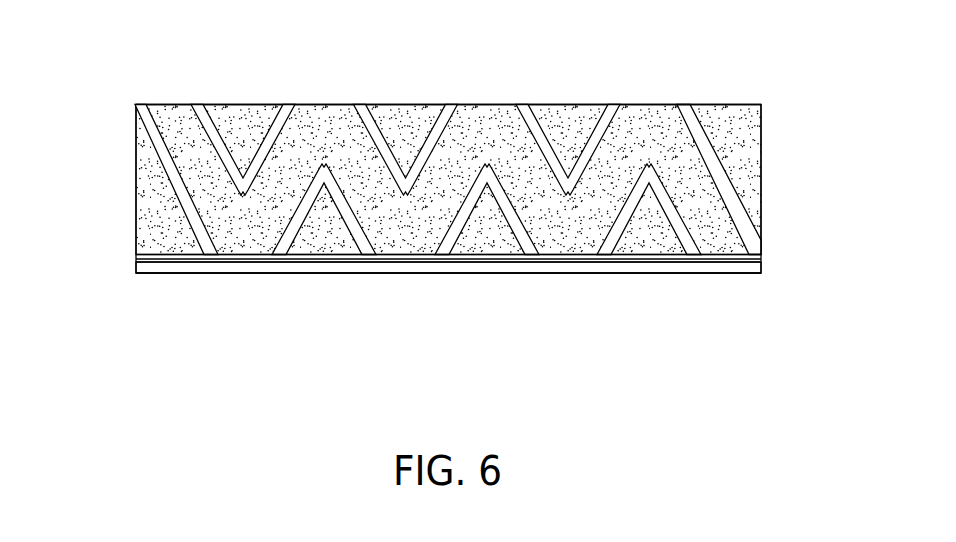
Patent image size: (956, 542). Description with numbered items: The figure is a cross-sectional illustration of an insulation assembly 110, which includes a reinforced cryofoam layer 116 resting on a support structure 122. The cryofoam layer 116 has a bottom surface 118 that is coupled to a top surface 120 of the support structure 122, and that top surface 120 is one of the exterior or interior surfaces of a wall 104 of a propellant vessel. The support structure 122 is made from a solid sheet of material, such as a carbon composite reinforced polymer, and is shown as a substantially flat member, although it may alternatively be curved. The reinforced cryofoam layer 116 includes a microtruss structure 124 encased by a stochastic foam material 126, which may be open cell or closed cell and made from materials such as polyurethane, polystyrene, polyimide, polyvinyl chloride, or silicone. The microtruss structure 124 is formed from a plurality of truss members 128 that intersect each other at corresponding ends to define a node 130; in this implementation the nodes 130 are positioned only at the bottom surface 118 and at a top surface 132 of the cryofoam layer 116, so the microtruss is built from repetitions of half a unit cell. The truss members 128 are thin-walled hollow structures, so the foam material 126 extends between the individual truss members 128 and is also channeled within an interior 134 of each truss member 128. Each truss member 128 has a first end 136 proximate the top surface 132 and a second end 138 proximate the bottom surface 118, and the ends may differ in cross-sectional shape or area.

The wall 104 is at (485, 265).
The insulation assembly 110 is at (108, 85).
The reinforced cryofoam layer 116 is at (772, 140).
The bottom surface 118 is at (755, 258).
The top surface 120 is at (158, 253).
The support structure 122 is at (170, 265).
The microtruss structure 124 is at (700, 89).
The stochastic foam material 126 is at (756, 195).
The truss member 128 is at (350, 225).
The node 130 is at (492, 104).
The top surface 132 is at (243, 104).
The interior 134 is at (193, 160).
The first end 136 is at (375, 104).
The second end 138 is at (680, 240).